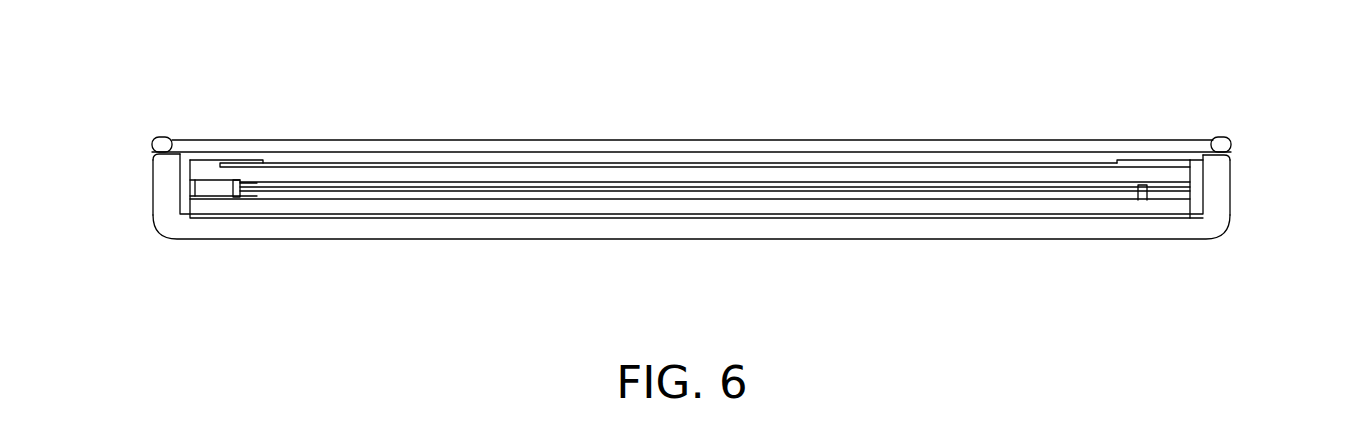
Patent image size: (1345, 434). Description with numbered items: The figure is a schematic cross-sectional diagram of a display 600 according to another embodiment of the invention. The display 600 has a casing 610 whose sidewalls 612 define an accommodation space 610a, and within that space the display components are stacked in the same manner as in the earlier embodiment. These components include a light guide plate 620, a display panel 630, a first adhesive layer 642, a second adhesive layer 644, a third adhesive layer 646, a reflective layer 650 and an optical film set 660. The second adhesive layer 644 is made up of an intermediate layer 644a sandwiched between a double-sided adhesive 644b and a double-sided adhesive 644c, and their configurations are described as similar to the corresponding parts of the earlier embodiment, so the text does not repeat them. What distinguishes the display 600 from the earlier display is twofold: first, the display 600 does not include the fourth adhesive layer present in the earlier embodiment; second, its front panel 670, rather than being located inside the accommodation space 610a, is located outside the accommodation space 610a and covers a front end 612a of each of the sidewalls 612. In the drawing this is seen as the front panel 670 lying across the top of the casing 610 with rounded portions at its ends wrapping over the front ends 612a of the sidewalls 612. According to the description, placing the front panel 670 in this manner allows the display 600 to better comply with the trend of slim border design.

The display 600 is at (1195, 320).
The casing 610 is at (848, 233).
The accommodation space 610a is at (1193, 163).
The sidewalls 612 is at (153, 168).
The front end 612a is at (168, 148).
The light guide plate 620 is at (635, 210).
The display panel 630 is at (762, 175).
The first adhesive layer 642 is at (212, 217).
The second adhesive layer 644 is at (172, 57).
The intermediate layer 644a is at (230, 187).
The double-sided adhesive 644b is at (204, 180).
The double-sided adhesive 644c is at (257, 196).
The third adhesive layer 646 is at (1137, 160).
The reflective layer 650 is at (530, 217).
The optical film set 660 is at (457, 195).
The front panel 670 is at (1068, 150).